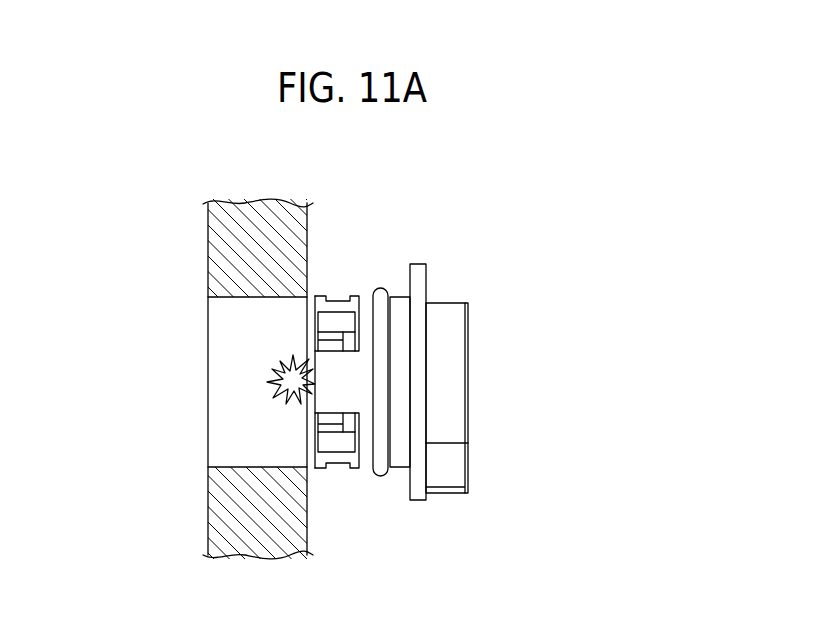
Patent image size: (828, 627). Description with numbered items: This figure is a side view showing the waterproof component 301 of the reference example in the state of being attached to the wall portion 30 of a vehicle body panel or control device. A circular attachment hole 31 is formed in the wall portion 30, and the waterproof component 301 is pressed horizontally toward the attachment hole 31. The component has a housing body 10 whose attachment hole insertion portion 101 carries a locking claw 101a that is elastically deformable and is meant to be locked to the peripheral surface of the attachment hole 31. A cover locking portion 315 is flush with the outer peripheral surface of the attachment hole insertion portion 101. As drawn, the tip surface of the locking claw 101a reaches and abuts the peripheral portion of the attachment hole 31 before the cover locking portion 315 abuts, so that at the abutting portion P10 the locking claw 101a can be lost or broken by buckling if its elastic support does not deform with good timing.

The wall portion 30 is at (215, 241).
The attachment hole 31 is at (220, 315).
The abutting portion P10 is at (293, 398).
The cover locking portion 315 is at (350, 297).
The attachment hole insertion portion 101 is at (398, 457).
The locking claw 101a is at (360, 383).
The housing body 10 is at (463, 333).
The waterproof component 301 is at (452, 214).